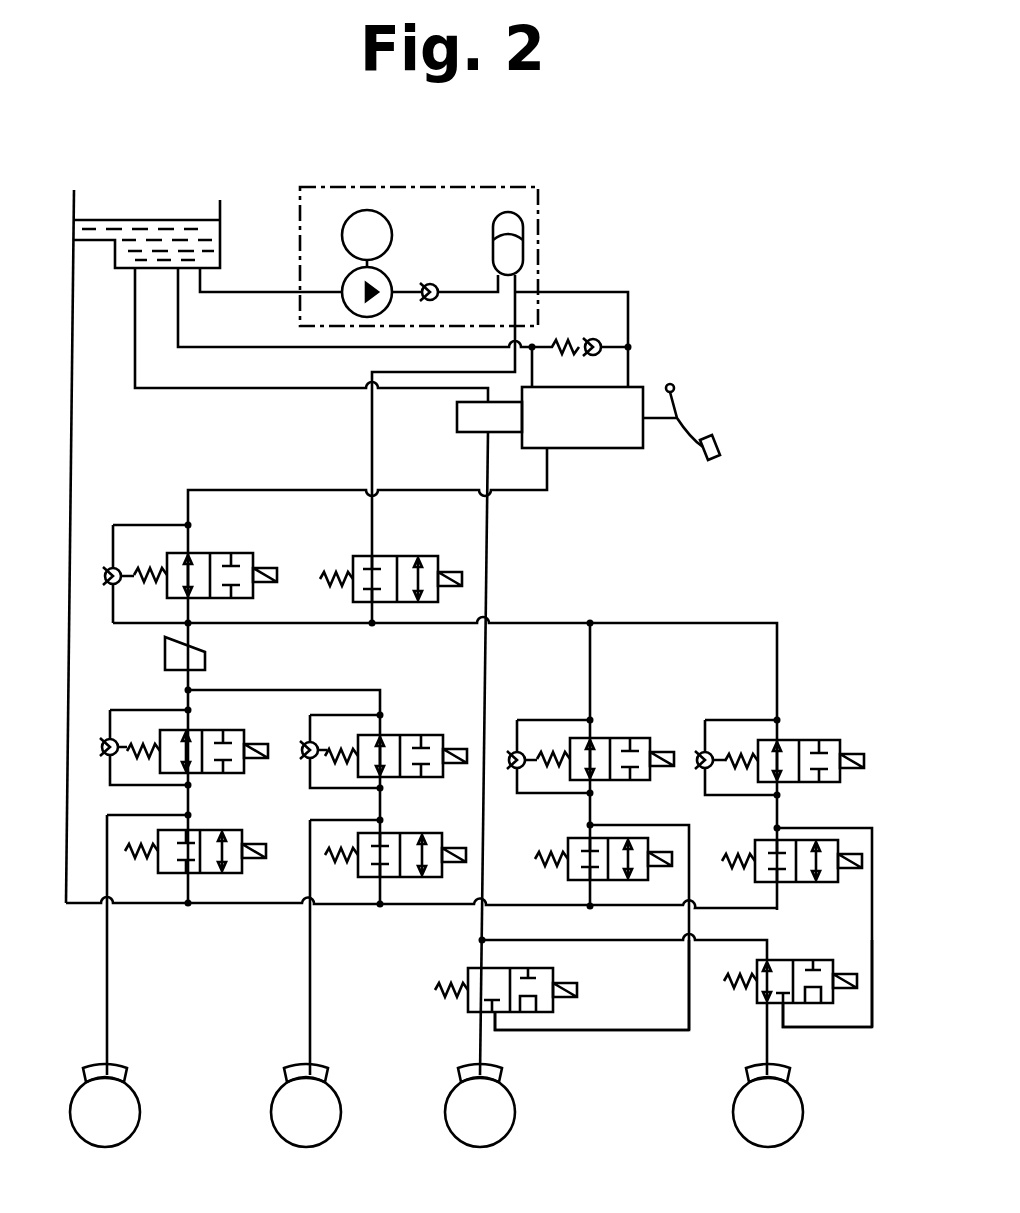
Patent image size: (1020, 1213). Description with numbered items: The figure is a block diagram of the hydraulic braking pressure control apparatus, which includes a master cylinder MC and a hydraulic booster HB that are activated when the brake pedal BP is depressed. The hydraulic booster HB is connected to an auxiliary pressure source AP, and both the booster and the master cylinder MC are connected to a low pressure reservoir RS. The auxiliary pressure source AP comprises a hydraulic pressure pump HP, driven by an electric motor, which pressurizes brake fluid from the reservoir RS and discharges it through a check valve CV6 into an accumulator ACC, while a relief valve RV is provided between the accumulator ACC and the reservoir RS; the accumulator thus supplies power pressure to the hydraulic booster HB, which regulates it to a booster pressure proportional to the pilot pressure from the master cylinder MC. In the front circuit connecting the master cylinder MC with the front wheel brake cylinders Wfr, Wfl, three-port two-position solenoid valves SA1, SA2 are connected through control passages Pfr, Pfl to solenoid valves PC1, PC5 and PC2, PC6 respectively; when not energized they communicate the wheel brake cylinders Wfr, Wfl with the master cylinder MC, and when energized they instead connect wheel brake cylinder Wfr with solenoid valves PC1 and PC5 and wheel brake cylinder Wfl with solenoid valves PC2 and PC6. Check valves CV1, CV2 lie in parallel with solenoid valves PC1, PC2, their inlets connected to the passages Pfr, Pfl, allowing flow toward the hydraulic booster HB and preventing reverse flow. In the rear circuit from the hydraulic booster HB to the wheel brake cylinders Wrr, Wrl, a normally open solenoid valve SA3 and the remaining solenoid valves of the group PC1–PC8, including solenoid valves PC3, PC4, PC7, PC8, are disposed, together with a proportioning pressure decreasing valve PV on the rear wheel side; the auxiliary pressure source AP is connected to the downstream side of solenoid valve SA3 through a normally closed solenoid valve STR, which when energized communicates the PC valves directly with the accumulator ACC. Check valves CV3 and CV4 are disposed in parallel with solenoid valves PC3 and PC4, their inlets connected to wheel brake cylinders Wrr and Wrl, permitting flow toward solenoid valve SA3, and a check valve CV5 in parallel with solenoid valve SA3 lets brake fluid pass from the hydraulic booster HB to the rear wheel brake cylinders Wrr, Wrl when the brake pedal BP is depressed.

The low pressure reservoir RS is at (222, 208).
The hydraulic pressure pump HP is at (345, 278).
The check valve CV6 is at (430, 284).
The accumulator ACC is at (512, 213).
The auxiliary pressure source AP is at (540, 270).
The relief valve RV is at (575, 345).
The hydraulic booster HB is at (582, 417).
The master cylinder MC is at (467, 416).
The brake pedal BP is at (717, 443).
The check valve CV5 is at (110, 568).
The solenoid valve SA3 is at (200, 553).
The solenoid valve STR is at (382, 556).
The proportioning pressure decreasing valve PV is at (208, 661).
The check valve CV4 is at (106, 739).
The solenoid valve PC4 is at (222, 730).
The check valve CV3 is at (303, 758).
The solenoid valve PC3 is at (388, 735).
The check valve CV2 is at (512, 752).
The solenoid valve PC2 is at (596, 738).
The check valve CV1 is at (702, 752).
The solenoid valve PC1 is at (790, 740).
The solenoid valve PC8 is at (195, 875).
The solenoid valve PC7 is at (392, 880).
The solenoid valve PC6 is at (580, 838).
The solenoid valve PC5 is at (792, 840).
The solenoid valve SA2 is at (553, 985).
The solenoid valve SA1 is at (782, 960).
The control passage Pfl is at (680, 1035).
The control passage Pfr is at (830, 1030).
The wheel brake cylinder Wrl is at (112, 1072).
The wheel brake cylinder Wrr is at (312, 1072).
The wheel brake cylinder Wfl is at (500, 1080).
The wheel brake cylinder Wfr is at (790, 1080).